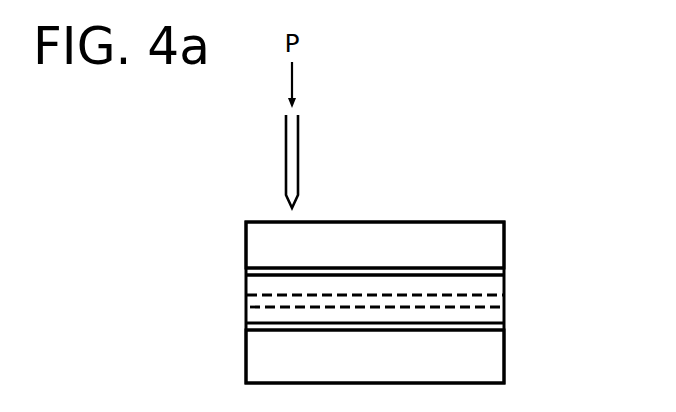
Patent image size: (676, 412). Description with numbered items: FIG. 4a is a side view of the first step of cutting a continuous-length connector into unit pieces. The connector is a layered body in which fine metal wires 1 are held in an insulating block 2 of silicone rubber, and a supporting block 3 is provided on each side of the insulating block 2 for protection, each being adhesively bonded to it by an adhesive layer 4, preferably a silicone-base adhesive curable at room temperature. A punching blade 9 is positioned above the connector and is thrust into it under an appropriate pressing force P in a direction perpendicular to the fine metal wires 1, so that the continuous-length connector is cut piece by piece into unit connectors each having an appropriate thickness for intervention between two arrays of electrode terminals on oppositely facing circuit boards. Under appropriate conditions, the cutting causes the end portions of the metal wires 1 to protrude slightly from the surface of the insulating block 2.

The metal wire 1 is at (495, 307).
The insulating block 2 is at (495, 290).
The supporting block 3 is at (495, 237).
The adhesive layer 4 is at (495, 275).
The punching blade 9 is at (293, 150).